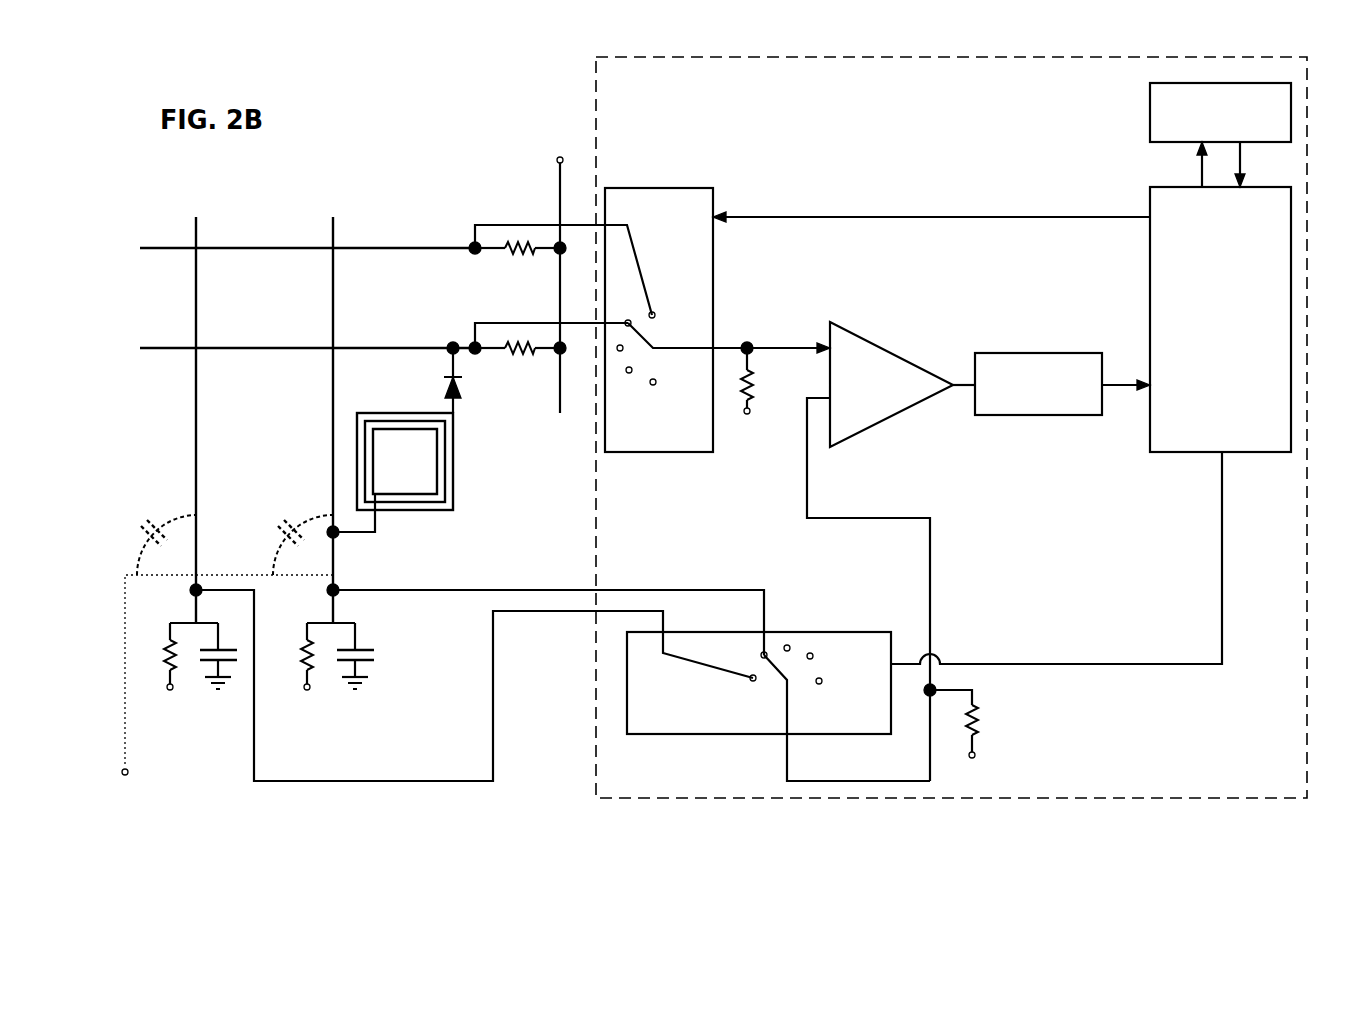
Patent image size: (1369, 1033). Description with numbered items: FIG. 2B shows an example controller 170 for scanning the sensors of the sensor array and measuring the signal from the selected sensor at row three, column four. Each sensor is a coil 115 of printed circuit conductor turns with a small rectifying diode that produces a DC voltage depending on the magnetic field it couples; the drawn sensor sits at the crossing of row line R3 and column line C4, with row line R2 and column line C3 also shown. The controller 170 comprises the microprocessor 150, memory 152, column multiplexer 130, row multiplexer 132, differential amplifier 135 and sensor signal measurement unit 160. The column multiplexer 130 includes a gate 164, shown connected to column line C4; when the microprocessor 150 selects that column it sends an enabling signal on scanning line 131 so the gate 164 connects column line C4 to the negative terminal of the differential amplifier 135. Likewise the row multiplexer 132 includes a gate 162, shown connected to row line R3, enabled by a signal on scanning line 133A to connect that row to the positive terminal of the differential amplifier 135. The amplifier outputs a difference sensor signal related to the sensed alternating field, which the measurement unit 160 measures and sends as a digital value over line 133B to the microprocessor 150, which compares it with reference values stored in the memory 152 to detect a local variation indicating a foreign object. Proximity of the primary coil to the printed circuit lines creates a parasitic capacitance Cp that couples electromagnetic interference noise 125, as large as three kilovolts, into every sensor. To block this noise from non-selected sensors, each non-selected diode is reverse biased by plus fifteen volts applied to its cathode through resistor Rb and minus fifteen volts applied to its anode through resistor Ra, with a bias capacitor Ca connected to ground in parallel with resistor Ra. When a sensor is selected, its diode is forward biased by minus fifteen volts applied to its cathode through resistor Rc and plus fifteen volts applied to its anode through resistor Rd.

The coil 115 is at (429, 465).
The electromagnetic interference noise 125 is at (127, 740).
The column multiplexer 130 is at (836, 632).
The scanning line 131 is at (1222, 545).
The row multiplexer 132 is at (657, 188).
The scanning line 133A is at (960, 216).
The line 133B is at (1118, 383).
The differential amplifier 135 is at (903, 356).
The microprocessor 150 is at (1150, 264).
The memory 152 is at (1150, 107).
The sensor signal measurement unit 160 is at (1010, 353).
The gate 162 is at (705, 346).
The gate 164 is at (787, 705).
The controller 170 is at (643, 797).
The row line R2 is at (402, 247).
The row line R3 is at (402, 347).
The column line C3 is at (196, 379).
The column line C4 is at (333, 379).
The parasitic capacitance Cp is at (133, 503).
The resistor Ra is at (243, 656).
The bias capacitor Ca is at (293, 646).
The resistor Rb is at (516, 268).
The resistor Rc is at (753, 398).
The resistor Rd is at (968, 735).